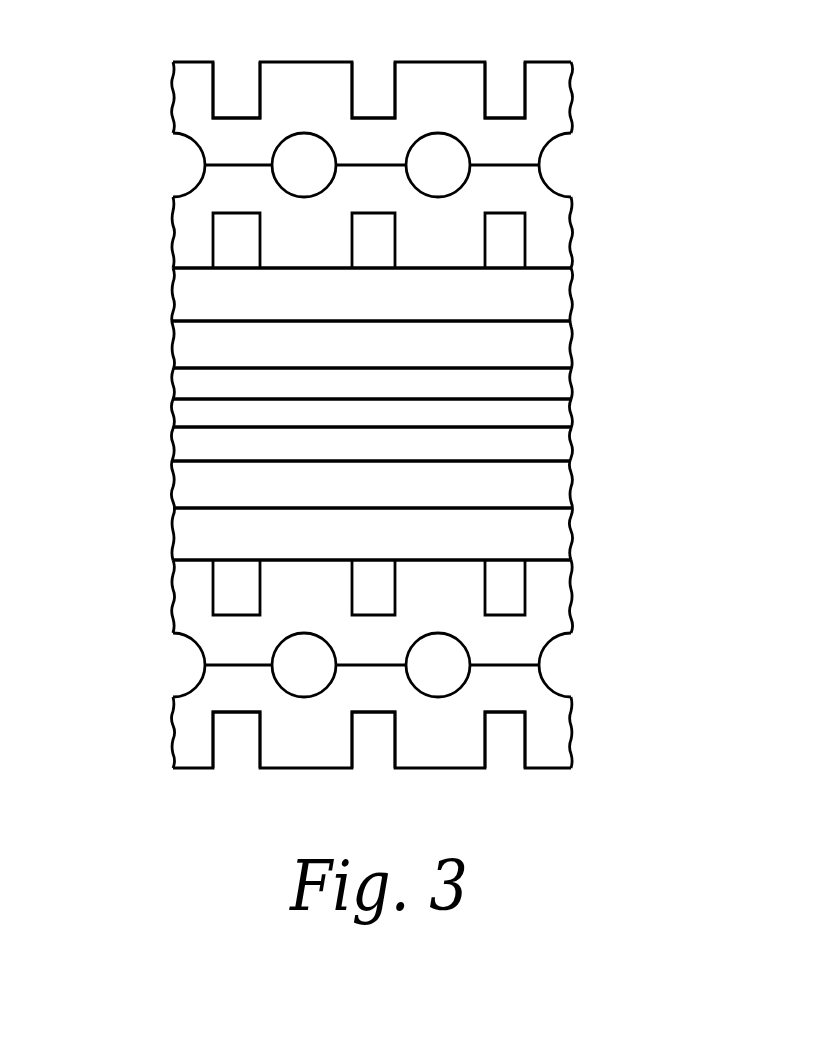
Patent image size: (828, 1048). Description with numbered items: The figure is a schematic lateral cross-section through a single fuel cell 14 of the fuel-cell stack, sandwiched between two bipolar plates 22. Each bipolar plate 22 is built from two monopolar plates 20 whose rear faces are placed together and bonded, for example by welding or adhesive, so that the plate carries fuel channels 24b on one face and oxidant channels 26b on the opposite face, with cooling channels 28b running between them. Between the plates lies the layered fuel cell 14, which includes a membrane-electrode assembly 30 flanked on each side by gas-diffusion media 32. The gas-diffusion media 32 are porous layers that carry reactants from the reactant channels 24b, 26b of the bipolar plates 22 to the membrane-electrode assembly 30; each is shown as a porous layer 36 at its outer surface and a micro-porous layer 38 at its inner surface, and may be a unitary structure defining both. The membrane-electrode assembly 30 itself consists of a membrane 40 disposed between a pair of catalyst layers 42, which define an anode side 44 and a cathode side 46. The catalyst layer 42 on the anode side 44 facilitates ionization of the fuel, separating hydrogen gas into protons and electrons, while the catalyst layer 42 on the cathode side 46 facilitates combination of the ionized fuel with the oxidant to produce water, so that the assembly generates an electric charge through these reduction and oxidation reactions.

The fuel cell 14 is at (47, 270).
The monopolar plate 20 is at (568, 126).
The bipolar plate 22 is at (161, 124).
The fuel channel 24b is at (201, 95).
The oxidant channel 26b is at (202, 235).
The cooling channel 28b is at (439, 120).
The membrane-electrode assembly 30 is at (154, 368).
The gas-diffusion media 32 is at (154, 272).
The porous layer 36 is at (566, 297).
The micro-porous layer 38 is at (560, 341).
The membrane 40 is at (562, 417).
The catalyst layer 42 is at (566, 383).
The anode side 44 is at (692, 423).
The cathode side 46 is at (691, 167).